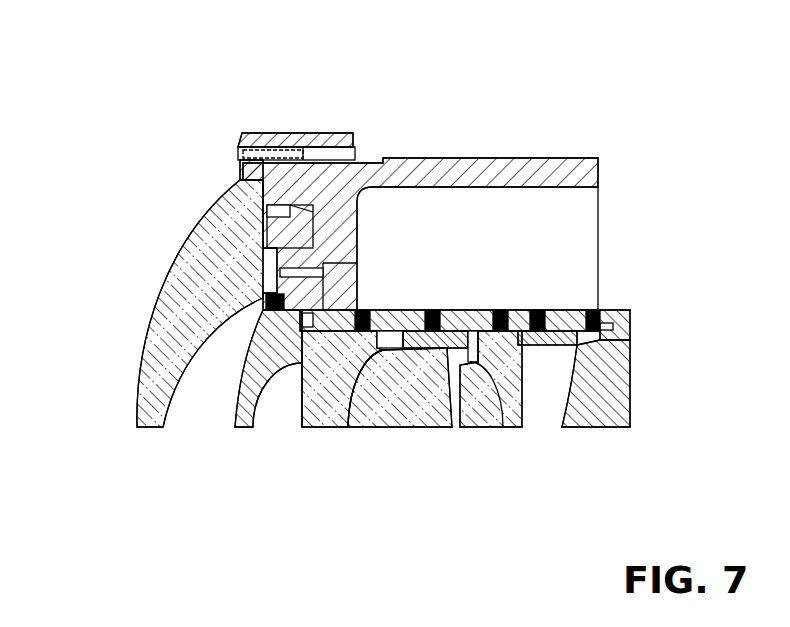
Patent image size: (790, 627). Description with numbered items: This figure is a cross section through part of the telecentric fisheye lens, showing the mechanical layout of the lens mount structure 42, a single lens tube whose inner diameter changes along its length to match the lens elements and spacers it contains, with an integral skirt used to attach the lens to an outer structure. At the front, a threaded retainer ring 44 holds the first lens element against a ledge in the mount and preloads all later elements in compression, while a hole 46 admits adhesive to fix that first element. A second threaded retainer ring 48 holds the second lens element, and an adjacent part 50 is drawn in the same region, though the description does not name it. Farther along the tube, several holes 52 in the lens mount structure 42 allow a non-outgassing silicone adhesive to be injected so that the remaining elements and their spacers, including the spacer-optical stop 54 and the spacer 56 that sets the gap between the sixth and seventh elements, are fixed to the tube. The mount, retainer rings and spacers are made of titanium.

The lens mount structure 42 is at (427, 144).
The threaded retainer ring 44 is at (270, 121).
The hole 46 is at (237, 168).
The threaded retainer ring 48 is at (272, 225).
The seal ring 50 is at (260, 301).
The holes 52 is at (384, 301).
The spacer-optical stop 54 is at (458, 360).
The spacer 56 is at (545, 357).